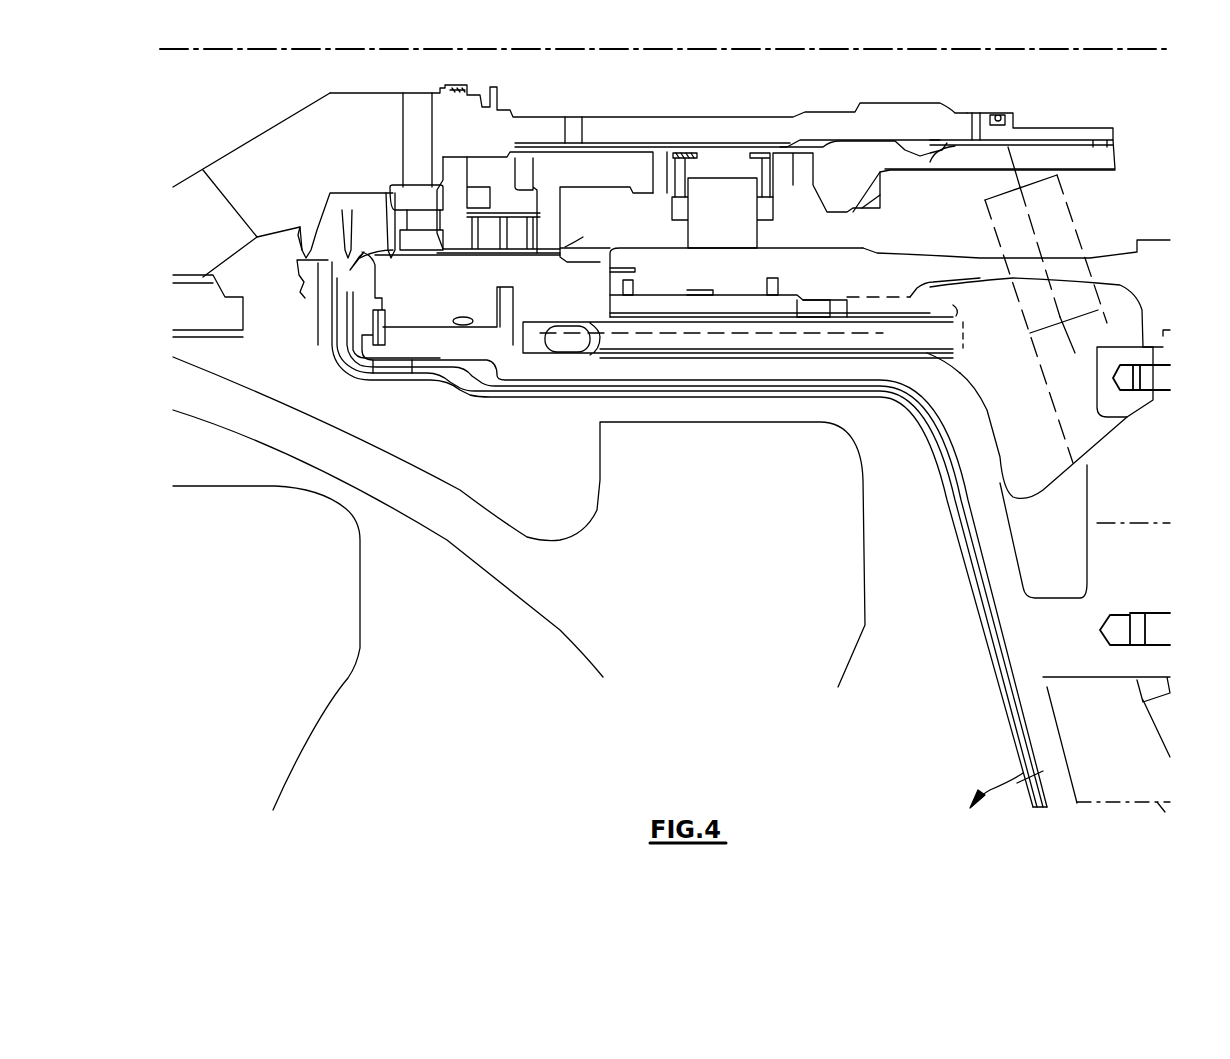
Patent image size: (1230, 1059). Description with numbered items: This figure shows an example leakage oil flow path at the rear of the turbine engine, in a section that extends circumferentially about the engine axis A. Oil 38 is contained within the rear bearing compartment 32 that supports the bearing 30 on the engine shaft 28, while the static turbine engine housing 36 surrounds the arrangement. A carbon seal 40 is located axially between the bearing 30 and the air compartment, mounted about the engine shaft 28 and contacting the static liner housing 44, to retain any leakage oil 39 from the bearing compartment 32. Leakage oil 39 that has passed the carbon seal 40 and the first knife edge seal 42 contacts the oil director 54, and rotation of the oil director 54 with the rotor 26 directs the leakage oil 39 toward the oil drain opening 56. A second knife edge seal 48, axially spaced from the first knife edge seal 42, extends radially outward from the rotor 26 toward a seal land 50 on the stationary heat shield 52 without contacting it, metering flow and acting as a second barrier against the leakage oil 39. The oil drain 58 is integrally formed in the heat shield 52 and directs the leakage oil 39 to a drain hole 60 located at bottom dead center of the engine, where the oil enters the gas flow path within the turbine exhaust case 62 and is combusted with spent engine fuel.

The engine axis A is at (833, 50).
The rotor 26 is at (318, 173).
The engine shaft 28 is at (718, 101).
The bearing 30 is at (745, 238).
The rear bearing compartment 32 is at (927, 207).
The turbine engine housing 36 is at (660, 250).
The oil 38 is at (911, 241).
The leakage oil 39 is at (612, 221).
The carbon seal 40 is at (513, 227).
The first knife edge seal 42 is at (392, 245).
The static liner housing 44 is at (467, 257).
The second knife edge seal 48 is at (307, 233).
The seal land 50 is at (305, 283).
The heat shield 52 is at (493, 395).
The oil director 54 is at (347, 250).
The oil drain opening 56 is at (342, 273).
The oil drain 58 is at (570, 383).
The drain hole 60 is at (1027, 780).
The turbine exhaust case 62 is at (955, 773).